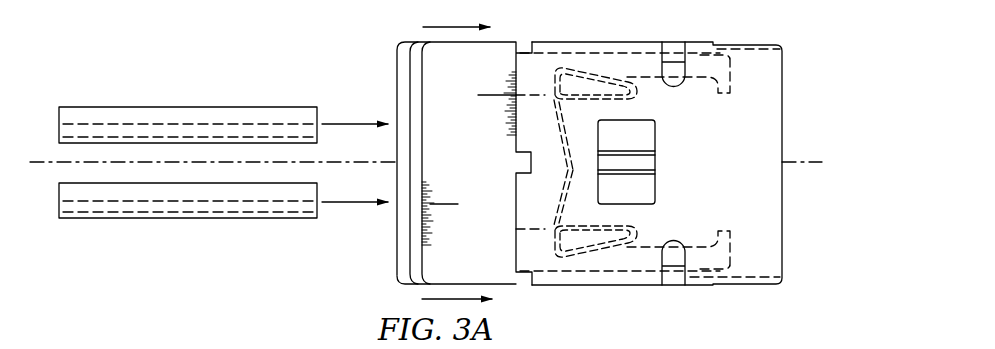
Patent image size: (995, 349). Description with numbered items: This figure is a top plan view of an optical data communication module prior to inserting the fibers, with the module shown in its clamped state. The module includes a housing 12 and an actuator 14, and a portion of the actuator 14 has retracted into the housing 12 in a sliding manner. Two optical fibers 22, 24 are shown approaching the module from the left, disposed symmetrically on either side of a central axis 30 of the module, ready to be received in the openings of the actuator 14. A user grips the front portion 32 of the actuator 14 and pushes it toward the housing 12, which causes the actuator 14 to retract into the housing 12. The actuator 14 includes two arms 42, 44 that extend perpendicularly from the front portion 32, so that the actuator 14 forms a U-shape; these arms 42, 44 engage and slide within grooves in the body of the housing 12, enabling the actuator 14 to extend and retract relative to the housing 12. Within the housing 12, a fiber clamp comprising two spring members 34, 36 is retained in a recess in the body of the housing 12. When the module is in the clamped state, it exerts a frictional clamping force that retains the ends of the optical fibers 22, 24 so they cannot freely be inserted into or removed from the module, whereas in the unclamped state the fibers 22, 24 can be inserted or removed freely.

The housing 12 is at (667, 25).
The actuator 14 is at (383, 41).
The optical fiber 22 is at (130, 107).
The optical fiber 24 is at (210, 218).
The central axis 30 is at (328, 163).
The front portion 32 is at (397, 251).
The spring member 34 is at (588, 70).
The spring member 36 is at (588, 256).
The arm 42 is at (720, 53).
The arm 44 is at (700, 272).